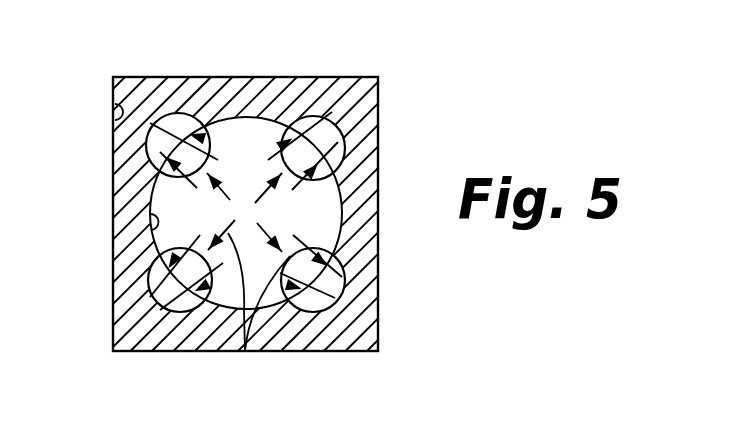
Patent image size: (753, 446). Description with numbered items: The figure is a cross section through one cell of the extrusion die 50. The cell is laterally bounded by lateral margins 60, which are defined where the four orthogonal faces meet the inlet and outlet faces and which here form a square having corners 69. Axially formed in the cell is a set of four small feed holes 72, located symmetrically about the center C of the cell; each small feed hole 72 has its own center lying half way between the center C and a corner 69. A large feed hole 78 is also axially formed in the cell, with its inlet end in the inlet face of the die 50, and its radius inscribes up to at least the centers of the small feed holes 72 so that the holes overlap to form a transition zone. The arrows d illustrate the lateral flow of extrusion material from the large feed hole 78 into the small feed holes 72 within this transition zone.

The die 50 is at (418, 106).
The corners 69 is at (378, 81).
The lateral margins 60 is at (114, 102).
The large feed hole 78 is at (150, 222).
The small feed holes 72 is at (345, 140).
The center of the cell C is at (243, 215).
The arrows d is at (222, 192).